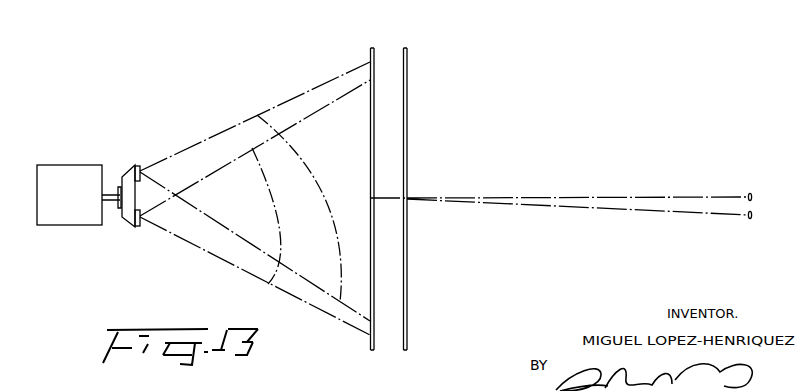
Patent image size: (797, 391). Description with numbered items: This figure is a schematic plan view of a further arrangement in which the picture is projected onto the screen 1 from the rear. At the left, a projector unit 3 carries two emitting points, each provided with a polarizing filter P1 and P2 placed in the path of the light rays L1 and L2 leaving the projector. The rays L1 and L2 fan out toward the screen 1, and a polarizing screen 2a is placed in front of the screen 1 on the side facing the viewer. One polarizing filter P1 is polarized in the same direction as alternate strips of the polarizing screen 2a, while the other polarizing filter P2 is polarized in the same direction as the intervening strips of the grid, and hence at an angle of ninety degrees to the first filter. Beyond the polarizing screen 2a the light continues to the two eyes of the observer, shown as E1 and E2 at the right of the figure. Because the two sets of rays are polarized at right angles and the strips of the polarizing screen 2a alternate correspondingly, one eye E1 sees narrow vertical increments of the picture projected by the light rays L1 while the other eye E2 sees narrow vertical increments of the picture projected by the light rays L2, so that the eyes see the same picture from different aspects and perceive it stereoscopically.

The light source 3 is at (55, 170).
The polarizing filter P1 is at (138, 167).
The polarizing filter P2 is at (141, 227).
The screen 1 is at (370, 60).
The polarizing screen 2a is at (407, 70).
The light rays L1 is at (299, 208).
The light rays L2 is at (280, 216).
The first eye of observer E1 is at (749, 220).
The second eye of observer E2 is at (750, 192).